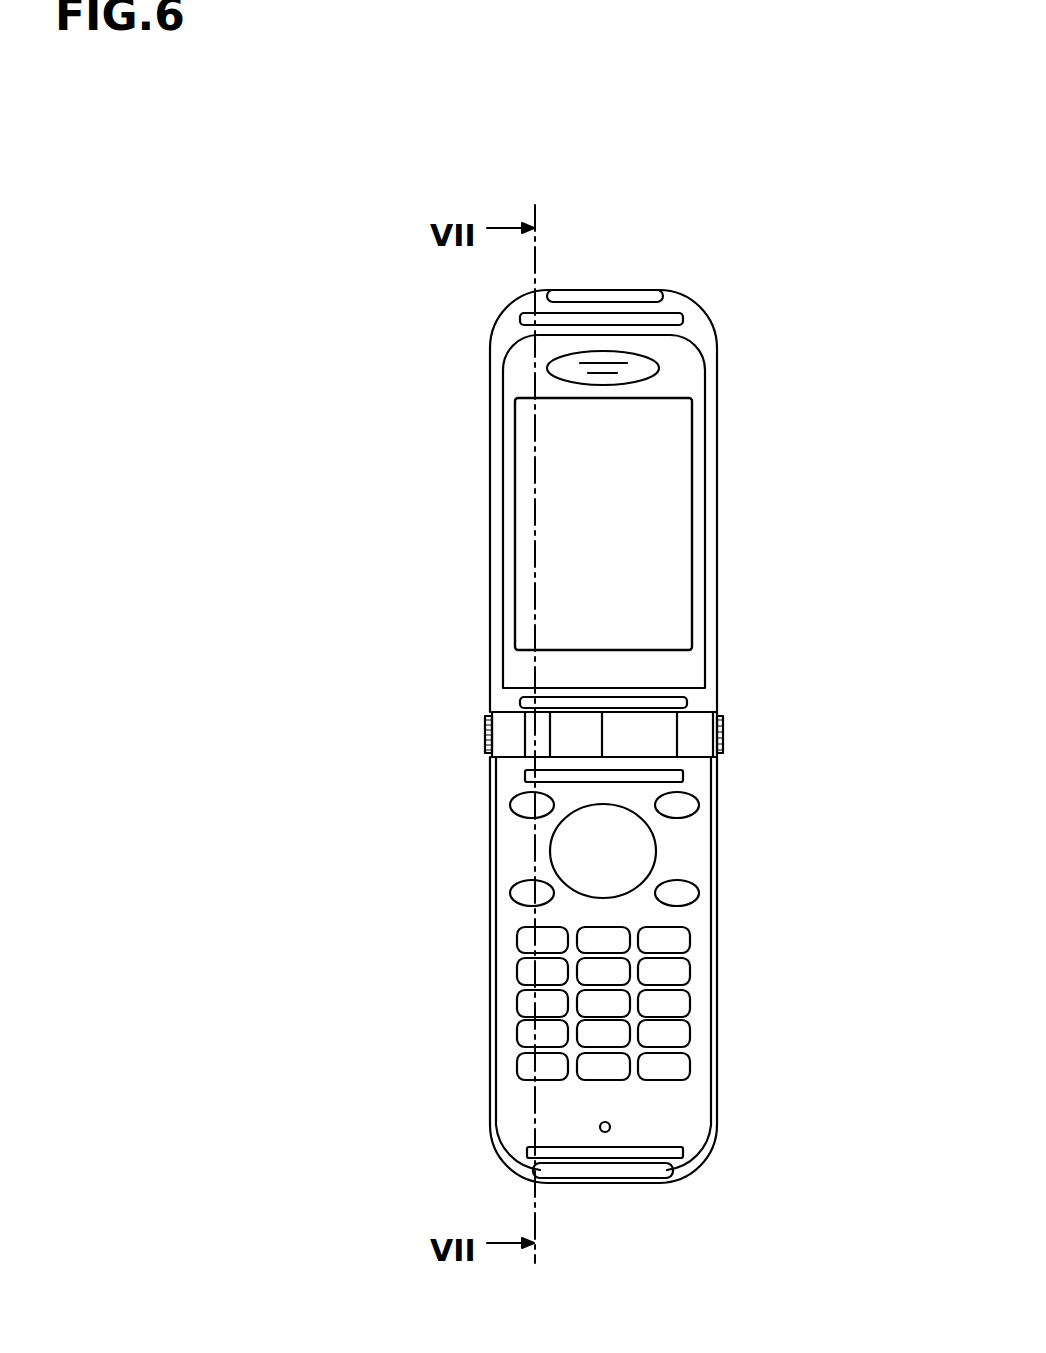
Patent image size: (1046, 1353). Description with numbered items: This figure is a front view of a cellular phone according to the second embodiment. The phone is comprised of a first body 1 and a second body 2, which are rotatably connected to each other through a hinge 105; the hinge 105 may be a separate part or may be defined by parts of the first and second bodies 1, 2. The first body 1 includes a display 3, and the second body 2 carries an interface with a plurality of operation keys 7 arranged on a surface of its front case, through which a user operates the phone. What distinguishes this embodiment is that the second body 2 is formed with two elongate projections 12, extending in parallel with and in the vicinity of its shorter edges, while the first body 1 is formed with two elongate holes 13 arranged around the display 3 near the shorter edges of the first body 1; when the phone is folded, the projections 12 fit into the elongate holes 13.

The first body 1 is at (600, 295).
The second body 2 is at (672, 1135).
The display 3 is at (670, 425).
The operation keys 7 is at (608, 938).
The elongate projections 12 is at (570, 783).
The elongate holes 13 is at (577, 318).
The hinge 105 is at (717, 742).